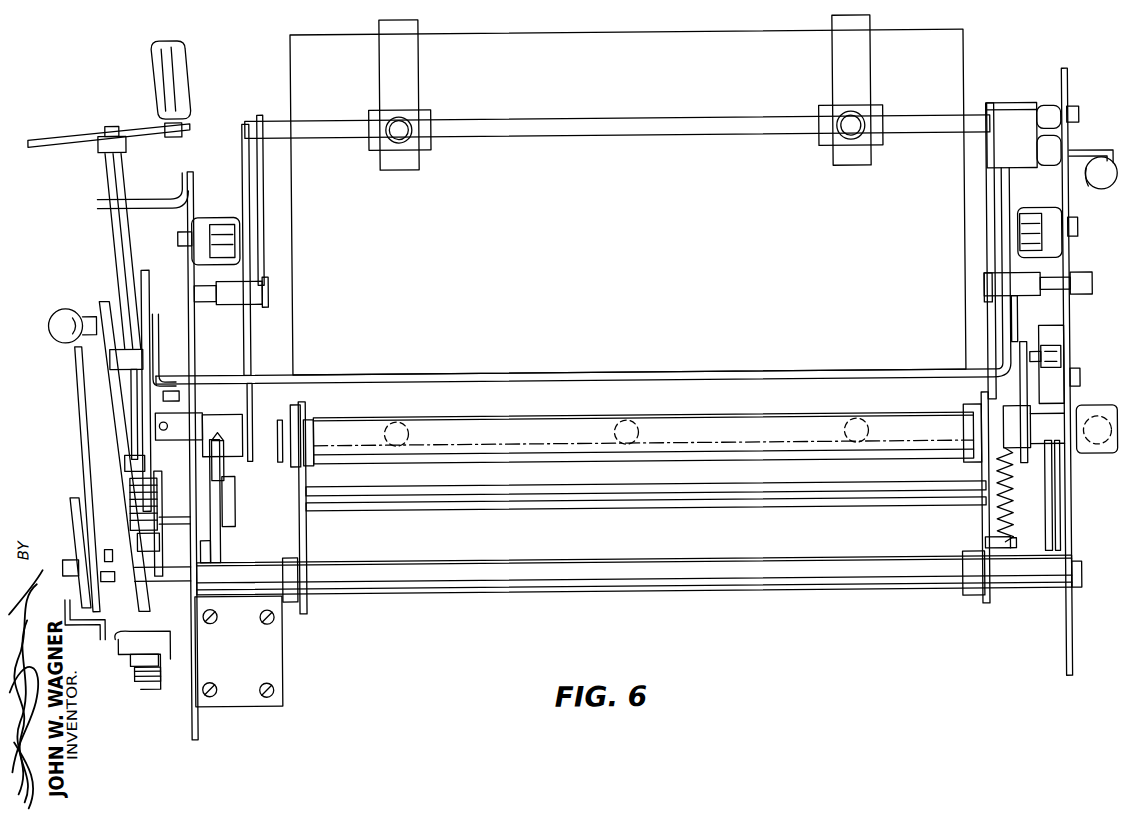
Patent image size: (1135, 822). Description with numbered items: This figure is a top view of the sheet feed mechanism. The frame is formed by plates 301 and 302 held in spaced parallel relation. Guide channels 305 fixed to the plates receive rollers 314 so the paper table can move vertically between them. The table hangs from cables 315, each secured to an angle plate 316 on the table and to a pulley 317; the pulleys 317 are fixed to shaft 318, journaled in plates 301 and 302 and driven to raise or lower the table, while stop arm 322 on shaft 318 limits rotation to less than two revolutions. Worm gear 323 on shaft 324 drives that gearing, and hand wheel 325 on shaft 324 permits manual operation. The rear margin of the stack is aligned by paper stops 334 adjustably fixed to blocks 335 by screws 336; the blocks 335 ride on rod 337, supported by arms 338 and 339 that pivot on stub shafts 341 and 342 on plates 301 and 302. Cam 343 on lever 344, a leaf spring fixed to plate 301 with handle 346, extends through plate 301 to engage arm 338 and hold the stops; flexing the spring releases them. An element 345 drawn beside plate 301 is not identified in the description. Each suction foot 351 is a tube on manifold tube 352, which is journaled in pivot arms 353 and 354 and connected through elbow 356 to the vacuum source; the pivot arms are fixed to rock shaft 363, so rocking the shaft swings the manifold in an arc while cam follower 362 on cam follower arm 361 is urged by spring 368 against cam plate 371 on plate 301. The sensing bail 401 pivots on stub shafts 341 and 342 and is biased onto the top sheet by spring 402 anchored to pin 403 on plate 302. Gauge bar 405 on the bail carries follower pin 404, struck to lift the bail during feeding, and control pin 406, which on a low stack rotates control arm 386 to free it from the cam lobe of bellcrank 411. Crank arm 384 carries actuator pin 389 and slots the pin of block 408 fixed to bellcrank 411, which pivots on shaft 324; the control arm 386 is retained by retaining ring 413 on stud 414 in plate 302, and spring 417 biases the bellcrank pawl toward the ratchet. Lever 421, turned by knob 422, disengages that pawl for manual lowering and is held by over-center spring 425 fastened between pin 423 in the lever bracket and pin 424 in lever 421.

The plate 301 is at (1061, 638).
The plate 302 is at (189, 717).
The guide channels 305 is at (195, 224).
The rollers 314 is at (220, 227).
The cables 315 is at (221, 456).
The angle plate 316 is at (247, 420).
The pulleys 317 is at (216, 534).
The shaft 318 is at (688, 516).
The stop arm 322 is at (231, 492).
The worm gear 323 is at (126, 485).
The shaft 324 is at (109, 181).
The hand wheel 325 is at (65, 138).
The paper stops 334 is at (418, 67).
The blocks 335 is at (430, 146).
The screws 336 is at (412, 126).
The rod 337 is at (627, 121).
The arm 338 is at (985, 234).
The arm 339 is at (261, 114).
The stub shaft 341 is at (1060, 282).
The stub shaft 342 is at (196, 301).
The cam 343 is at (1055, 166).
The lever 344 is at (1070, 158).
The bolt 345 is at (1070, 132).
The handle 346 is at (1114, 196).
The suction foot 351 is at (619, 418).
The manifold tube 352 is at (487, 418).
The pivot arm 353 is at (302, 524).
The pivot arm 354 is at (981, 547).
The elbow 356 is at (1076, 462).
The cam follower arm 361 is at (1021, 348).
The cam follower 362 is at (1058, 360).
The rock shaft 363 is at (711, 594).
The spring 368 is at (991, 471).
The cam plate 371 is at (1057, 343).
The crank arm 384 is at (70, 526).
The control arm 386 is at (128, 398).
The actuator pin 389 is at (87, 634).
The bail 401 is at (558, 377).
The spring 402 is at (173, 383).
The pin 403 is at (187, 391).
The follower pin 404 is at (131, 465).
The gauge bar 405 is at (147, 445).
The control pin 406 is at (114, 298).
The block 408 is at (65, 570).
The bellcrank 411 is at (107, 554).
The retaining ring 413 is at (134, 539).
The stud 414 is at (208, 550).
The spring 417 is at (109, 574).
The lever 421 is at (71, 346).
The knob 422 is at (54, 314).
The pin 423 is at (159, 681).
The pin 424 is at (134, 678).
The spring 425 is at (134, 660).